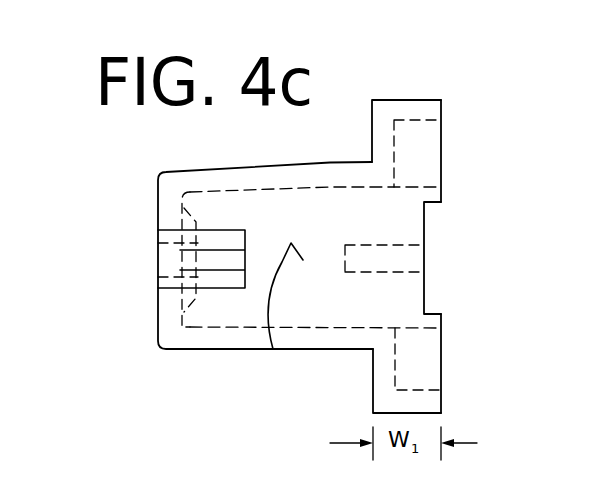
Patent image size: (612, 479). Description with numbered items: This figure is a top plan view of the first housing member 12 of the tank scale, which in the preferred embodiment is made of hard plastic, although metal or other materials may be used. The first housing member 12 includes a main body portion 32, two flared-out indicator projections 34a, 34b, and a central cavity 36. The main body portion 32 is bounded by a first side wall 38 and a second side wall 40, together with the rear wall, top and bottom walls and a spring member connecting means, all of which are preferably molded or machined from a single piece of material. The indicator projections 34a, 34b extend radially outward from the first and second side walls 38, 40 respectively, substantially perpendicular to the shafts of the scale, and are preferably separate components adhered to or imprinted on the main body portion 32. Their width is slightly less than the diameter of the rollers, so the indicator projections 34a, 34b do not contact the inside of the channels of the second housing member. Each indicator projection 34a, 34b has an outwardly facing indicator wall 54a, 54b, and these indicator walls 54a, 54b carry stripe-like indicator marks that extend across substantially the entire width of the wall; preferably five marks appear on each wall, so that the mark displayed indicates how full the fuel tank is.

The first housing member 12 is at (108, 277).
The main body portion 32 is at (192, 349).
The indicator projection 34a is at (445, 402).
The indicator projection 34b is at (441, 113).
The central cavity 36 is at (273, 349).
The first side wall 38 is at (307, 327).
The second side wall 40 is at (312, 188).
The indicator wall 54a is at (407, 413).
The indicator wall 54b is at (390, 100).